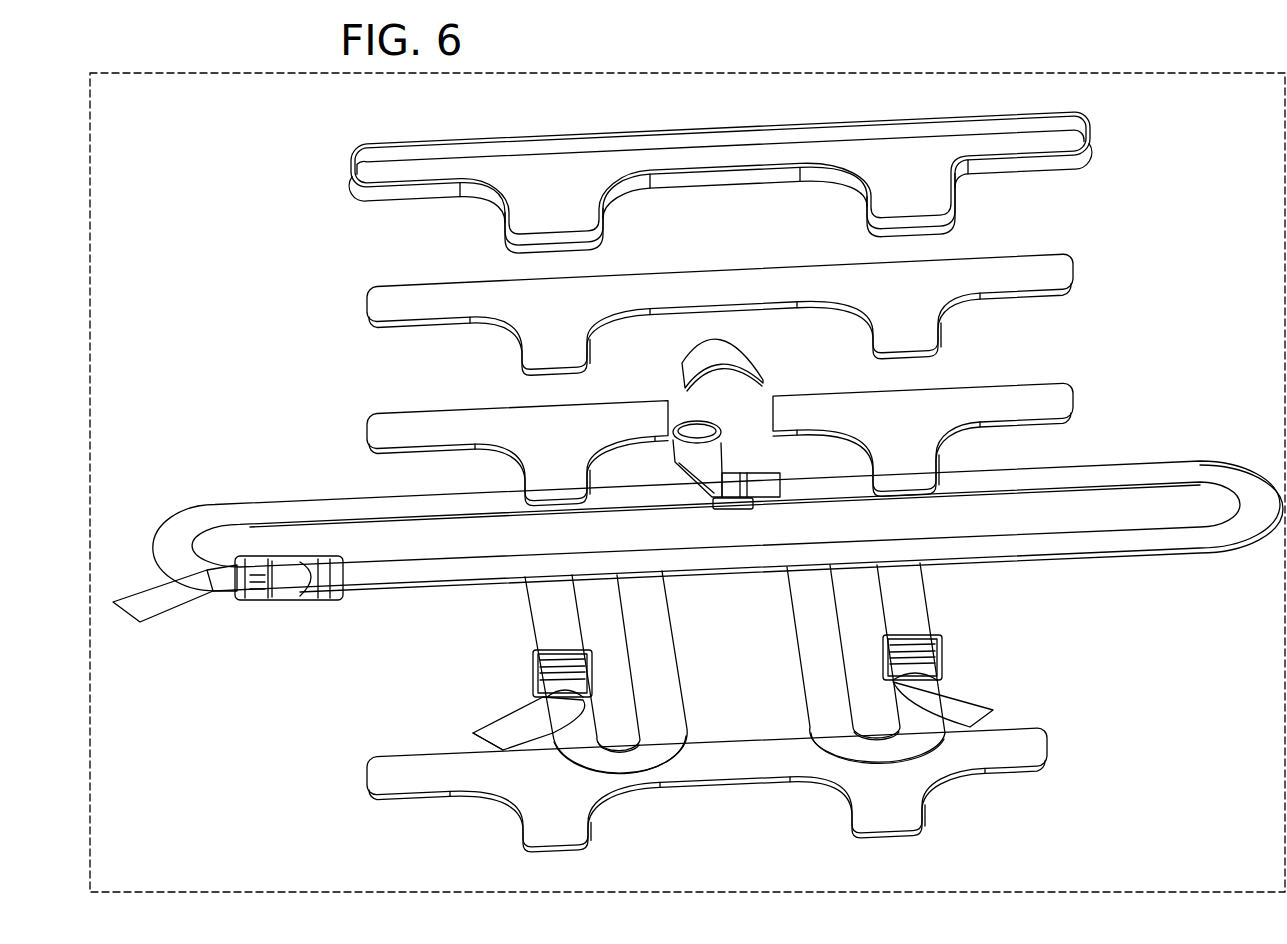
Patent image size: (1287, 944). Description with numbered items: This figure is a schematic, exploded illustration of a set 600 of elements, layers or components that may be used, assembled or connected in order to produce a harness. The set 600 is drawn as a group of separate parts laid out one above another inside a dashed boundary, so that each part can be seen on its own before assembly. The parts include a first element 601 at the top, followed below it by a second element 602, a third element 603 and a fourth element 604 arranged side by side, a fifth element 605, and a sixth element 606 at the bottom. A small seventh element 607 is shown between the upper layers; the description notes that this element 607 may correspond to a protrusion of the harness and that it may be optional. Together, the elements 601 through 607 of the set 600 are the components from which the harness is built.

The set of elements 600 is at (207, 73).
The element 601 is at (350, 177).
The element 602 is at (363, 297).
The element 603 is at (365, 427).
The element 604 is at (1075, 390).
The element 605 is at (1140, 562).
The element 606 is at (1080, 727).
The element 607 is at (754, 351).